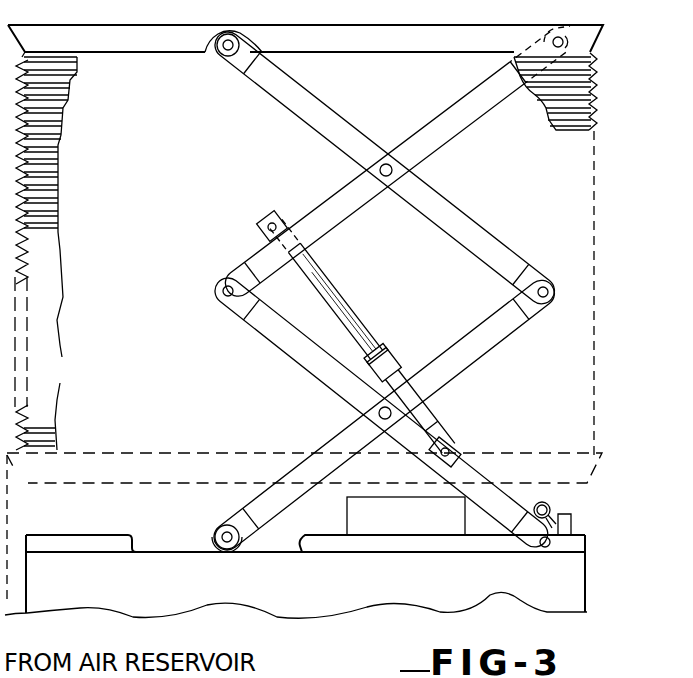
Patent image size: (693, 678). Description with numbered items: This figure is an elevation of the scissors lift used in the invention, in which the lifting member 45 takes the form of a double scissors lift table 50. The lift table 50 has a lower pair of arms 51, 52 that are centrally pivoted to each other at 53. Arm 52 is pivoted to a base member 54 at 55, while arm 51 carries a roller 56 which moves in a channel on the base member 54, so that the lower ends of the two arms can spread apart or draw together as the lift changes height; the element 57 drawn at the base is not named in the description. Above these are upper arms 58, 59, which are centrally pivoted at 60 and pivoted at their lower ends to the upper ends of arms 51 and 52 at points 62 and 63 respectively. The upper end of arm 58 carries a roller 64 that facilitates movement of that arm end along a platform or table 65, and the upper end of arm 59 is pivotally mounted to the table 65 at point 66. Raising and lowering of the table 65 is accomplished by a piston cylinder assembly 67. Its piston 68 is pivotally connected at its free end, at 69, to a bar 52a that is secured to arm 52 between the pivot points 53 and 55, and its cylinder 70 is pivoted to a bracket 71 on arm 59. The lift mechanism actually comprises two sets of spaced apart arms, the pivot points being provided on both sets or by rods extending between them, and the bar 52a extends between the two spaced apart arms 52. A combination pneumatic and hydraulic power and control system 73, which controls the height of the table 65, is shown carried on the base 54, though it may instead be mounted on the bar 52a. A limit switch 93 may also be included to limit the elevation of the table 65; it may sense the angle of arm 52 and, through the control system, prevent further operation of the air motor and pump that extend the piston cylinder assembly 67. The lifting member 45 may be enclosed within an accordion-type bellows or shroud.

The lifting member 45 is at (158, 250).
The double scissors lift table 50 is at (584, 292).
The lower arm 51 is at (470, 360).
The lower arm 52 is at (470, 470).
The bar 52a is at (432, 468).
The central pivot of lower arms 53 is at (376, 413).
The base member 54 is at (405, 553).
The pivot of arm 52 to base 55 is at (545, 550).
The roller 56 is at (213, 526).
The base plate 57 is at (312, 553).
The upper arm 58 is at (484, 228).
The upper arm 59 is at (338, 210).
The central pivot of upper arms 60 is at (386, 162).
The pivot of arm 58 to arm 51 62 is at (552, 286).
The pivot of arm 59 to arm 52 63 is at (220, 298).
The roller 64 is at (216, 52).
The platform or table 65 is at (378, 50).
The pivot of arm 59 to table 66 is at (568, 41).
The piston cylinder assembly 67 is at (368, 320).
The piston 68 is at (426, 420).
The pivot of piston to bar 69 is at (453, 452).
The cylinder 70 is at (337, 306).
The bracket 71 is at (256, 234).
The combination pneumatic and hydraulic power and control system 73 is at (400, 528).
The limit switch 93 is at (553, 512).